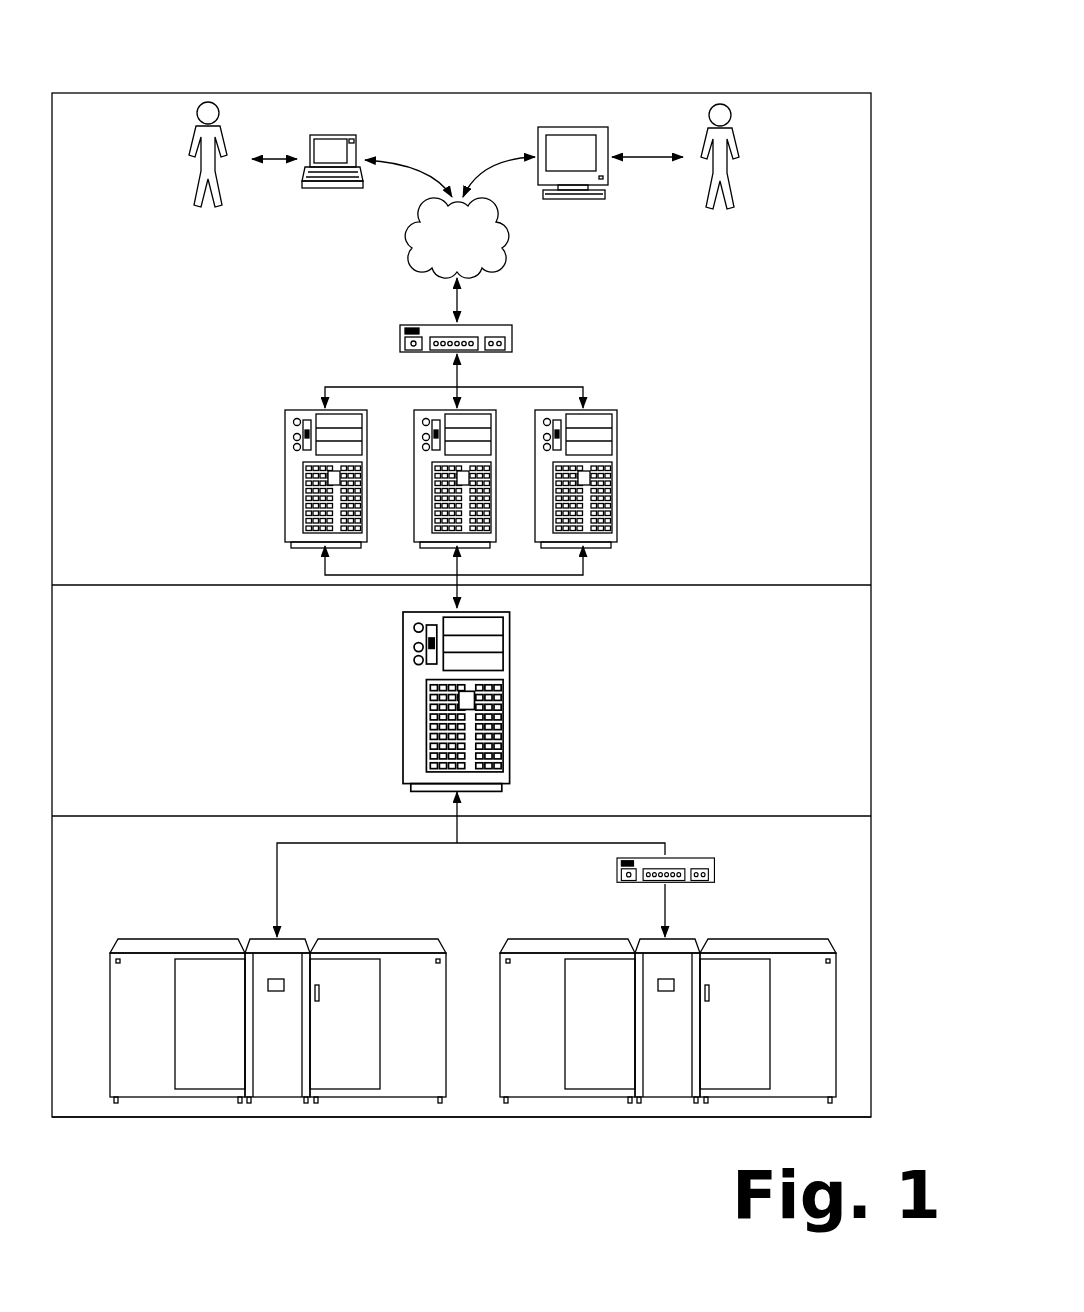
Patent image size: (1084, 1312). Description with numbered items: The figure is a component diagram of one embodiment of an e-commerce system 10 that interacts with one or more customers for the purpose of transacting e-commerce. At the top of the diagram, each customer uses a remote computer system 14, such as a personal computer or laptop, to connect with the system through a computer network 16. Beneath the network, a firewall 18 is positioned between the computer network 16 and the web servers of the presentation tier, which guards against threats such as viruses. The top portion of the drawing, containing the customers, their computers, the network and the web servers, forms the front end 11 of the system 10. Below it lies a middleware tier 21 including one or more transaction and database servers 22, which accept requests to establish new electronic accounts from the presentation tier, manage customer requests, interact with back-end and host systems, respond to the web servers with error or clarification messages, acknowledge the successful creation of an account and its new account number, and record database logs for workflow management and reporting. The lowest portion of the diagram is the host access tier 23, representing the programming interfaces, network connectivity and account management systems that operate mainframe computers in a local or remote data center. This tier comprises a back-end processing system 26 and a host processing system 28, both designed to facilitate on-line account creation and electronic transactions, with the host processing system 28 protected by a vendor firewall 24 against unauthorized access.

The system 10 is at (420, 1145).
The client tier 11 is at (815, 163).
The remote computer system 14 is at (338, 134).
The computer network 16 is at (508, 242).
The firewall 18 is at (514, 347).
The middleware tier 21 is at (738, 676).
The transaction and database server 22 is at (403, 772).
The host access tier 23 is at (826, 838).
The vendor firewall 24 is at (617, 866).
The back-end processing system 26 is at (212, 939).
The host processing system 28 is at (828, 982).